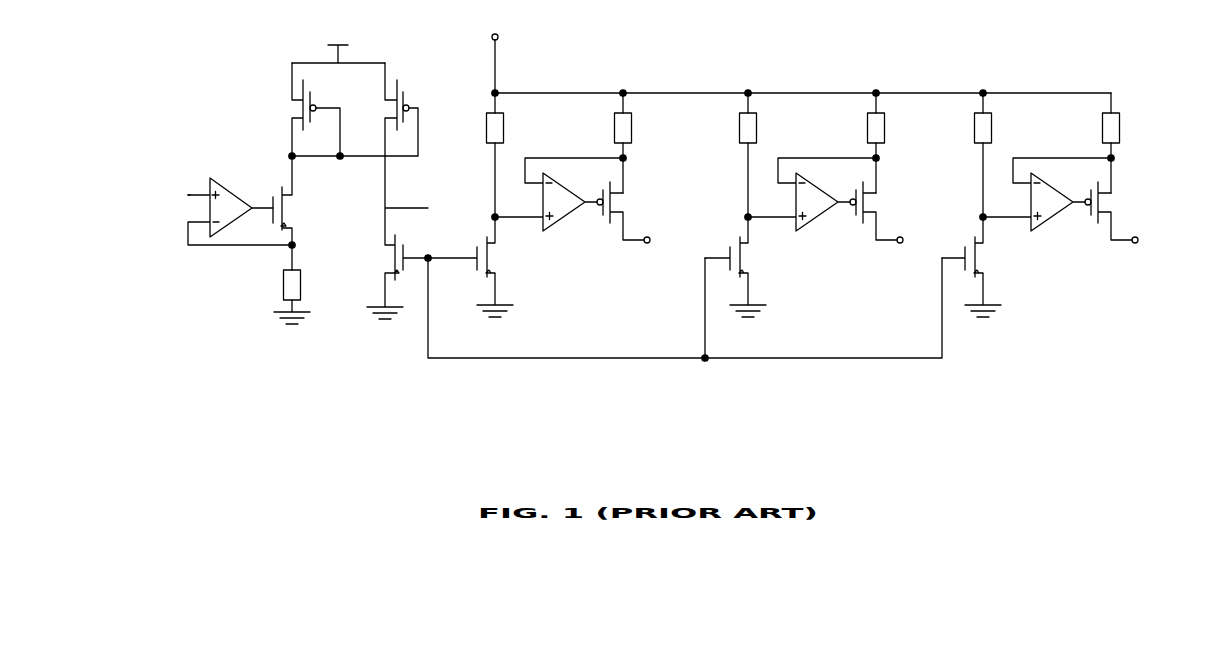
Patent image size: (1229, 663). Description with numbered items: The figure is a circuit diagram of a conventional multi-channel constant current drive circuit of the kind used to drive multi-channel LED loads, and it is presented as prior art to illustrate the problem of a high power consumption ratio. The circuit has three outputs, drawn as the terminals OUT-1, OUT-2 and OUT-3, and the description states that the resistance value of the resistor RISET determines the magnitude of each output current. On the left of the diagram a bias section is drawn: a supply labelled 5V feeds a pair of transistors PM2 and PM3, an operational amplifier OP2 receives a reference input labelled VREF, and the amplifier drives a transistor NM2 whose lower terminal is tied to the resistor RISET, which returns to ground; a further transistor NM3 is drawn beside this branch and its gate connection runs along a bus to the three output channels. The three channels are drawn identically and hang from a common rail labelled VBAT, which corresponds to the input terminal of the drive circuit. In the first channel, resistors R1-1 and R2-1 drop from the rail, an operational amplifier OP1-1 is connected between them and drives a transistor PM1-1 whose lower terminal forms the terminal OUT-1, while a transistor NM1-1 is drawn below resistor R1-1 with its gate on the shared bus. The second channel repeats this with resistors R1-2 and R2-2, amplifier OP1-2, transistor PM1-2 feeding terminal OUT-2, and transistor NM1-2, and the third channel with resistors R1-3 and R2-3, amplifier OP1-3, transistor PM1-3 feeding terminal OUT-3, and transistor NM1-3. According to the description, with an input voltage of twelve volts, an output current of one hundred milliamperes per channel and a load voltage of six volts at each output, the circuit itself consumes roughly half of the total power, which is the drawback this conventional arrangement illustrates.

The 5V supply 5V is at (338, 50).
The PMOS transistor PM2' PM2 is at (296, 109).
The PMOS transistor PM3' PM3 is at (355, 109).
The operational amplifier OP2' OP2 is at (240, 206).
The reference voltage input VREF' VREF is at (167, 195).
The NMOS transistor NM2' NM2 is at (304, 200).
The resistor RISET is at (273, 284).
The NMOS transistor NM3' NM3 is at (384, 237).
The battery voltage VBAT is at (792, 53).
The resistor R1-1' R1-1 is at (515, 155).
The resistor R2-1' R2-1 is at (603, 143).
The operational amplifier OP1-1' OP1-1 is at (559, 194).
The PMOS transistor PM1-1' PM1-1 is at (631, 211).
The output OUT-1' OUT-1 is at (672, 240).
The NMOS transistor NM1-1' NM1-1 is at (491, 267).
The resistor R1-2' R1-2 is at (768, 155).
The resistor R2-2' R2-2 is at (856, 143).
The operational amplifier OP1-2' OP1-2 is at (812, 194).
The PMOS transistor PM1-2' PM1-2 is at (884, 211).
The output OUT-2' OUT-2 is at (925, 240).
The NMOS transistor NM1-2' NM1-2 is at (756, 267).
The resistor R1-3' R1-3 is at (1003, 155).
The resistor R2-3' R2-3 is at (1091, 143).
The operational amplifier OP1-3' OP1-3 is at (1047, 194).
The PMOS transistor PM1-3' PM1-3 is at (1119, 211).
The output OUT-3' OUT-3 is at (1160, 240).
The NMOS transistor NM1-3' NM1-3 is at (992, 267).